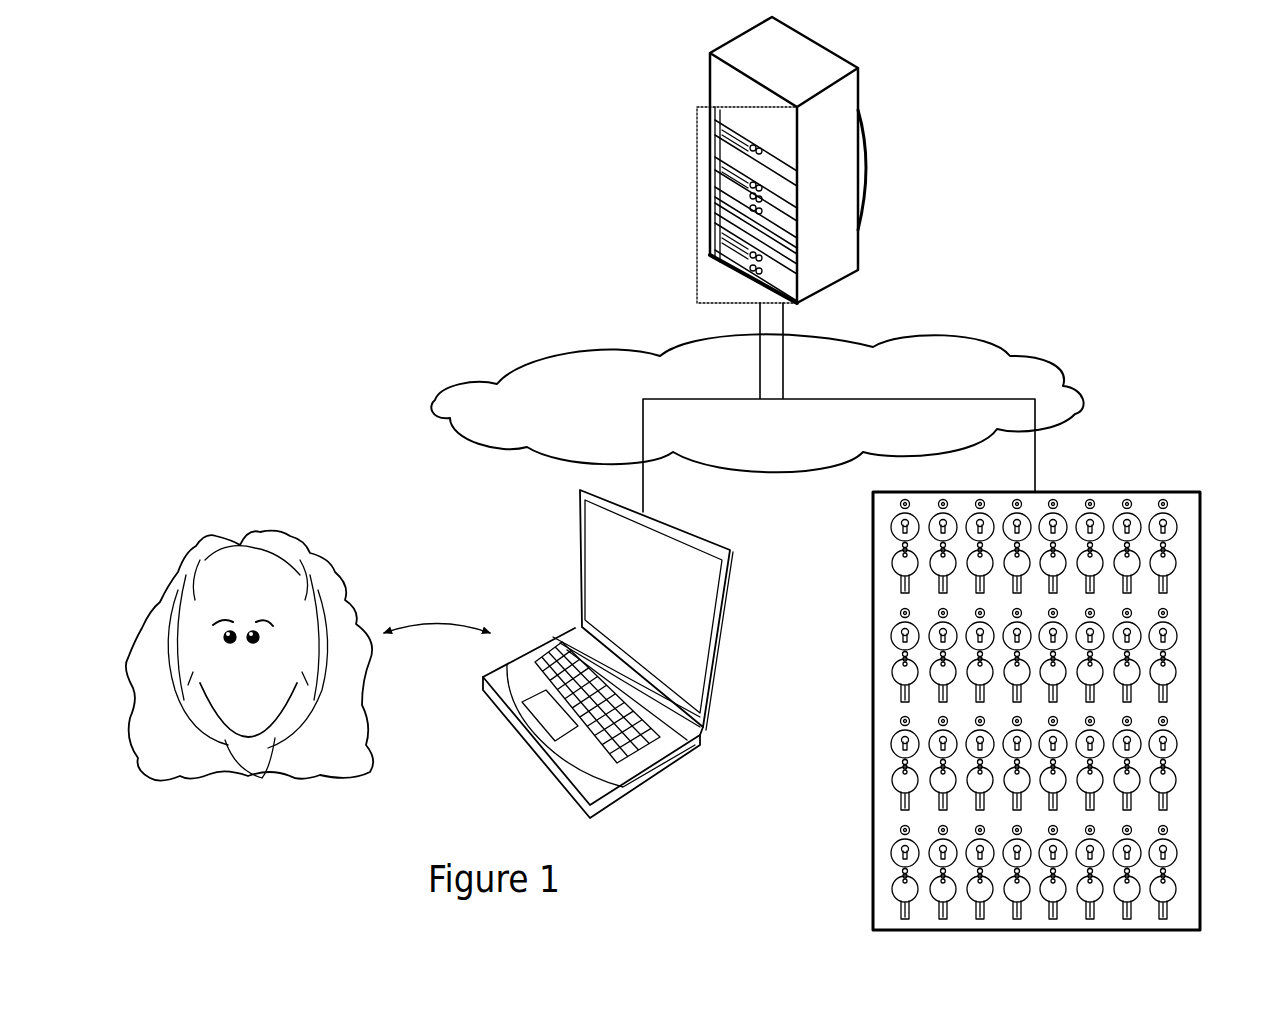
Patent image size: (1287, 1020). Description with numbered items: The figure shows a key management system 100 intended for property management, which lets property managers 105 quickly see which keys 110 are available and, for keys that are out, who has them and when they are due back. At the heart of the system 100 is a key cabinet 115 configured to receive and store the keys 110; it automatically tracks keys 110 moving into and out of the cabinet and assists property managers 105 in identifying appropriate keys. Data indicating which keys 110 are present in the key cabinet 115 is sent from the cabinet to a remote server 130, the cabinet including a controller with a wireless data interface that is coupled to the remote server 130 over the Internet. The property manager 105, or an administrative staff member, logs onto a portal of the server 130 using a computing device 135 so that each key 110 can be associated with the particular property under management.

The key management system 100 is at (222, 243).
The property manager 105 is at (145, 574).
The key 110 is at (888, 885).
The key cabinet 115 is at (1144, 488).
The remote server 130 is at (876, 126).
The computing device 135 is at (727, 706).